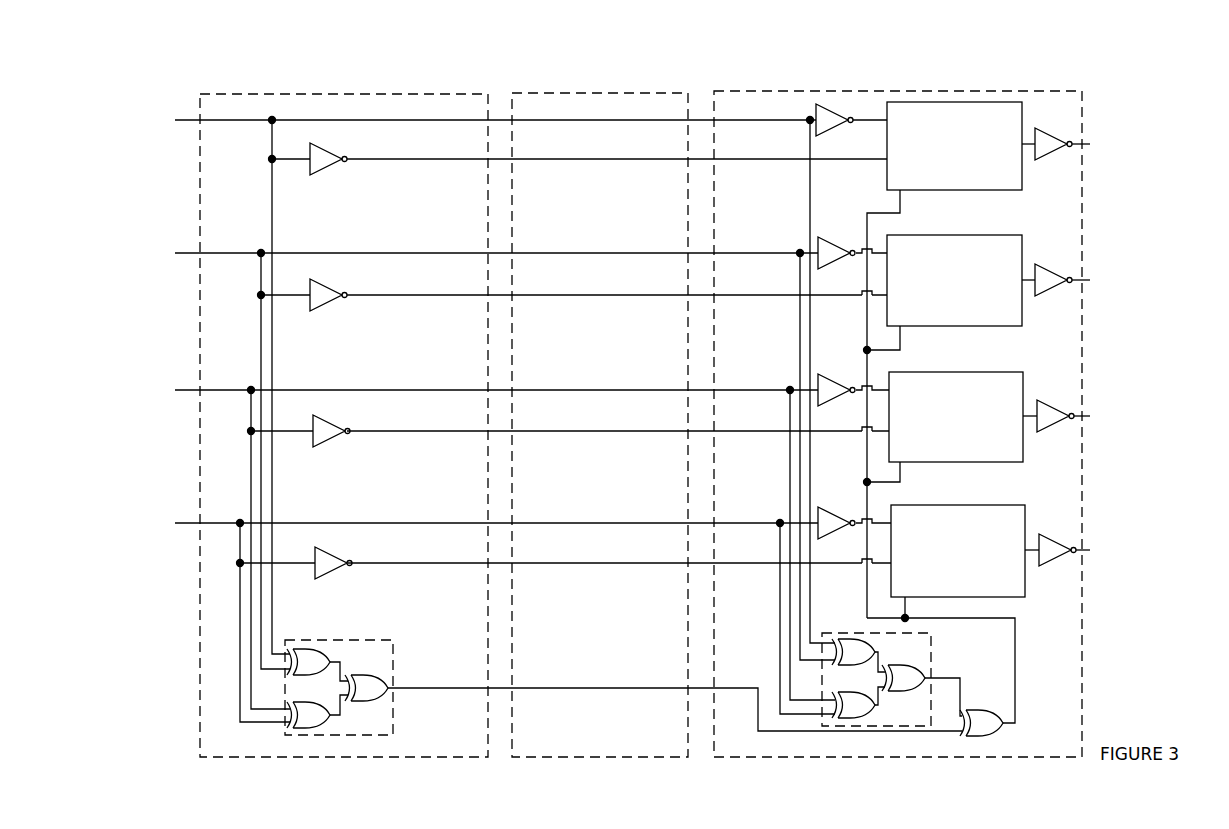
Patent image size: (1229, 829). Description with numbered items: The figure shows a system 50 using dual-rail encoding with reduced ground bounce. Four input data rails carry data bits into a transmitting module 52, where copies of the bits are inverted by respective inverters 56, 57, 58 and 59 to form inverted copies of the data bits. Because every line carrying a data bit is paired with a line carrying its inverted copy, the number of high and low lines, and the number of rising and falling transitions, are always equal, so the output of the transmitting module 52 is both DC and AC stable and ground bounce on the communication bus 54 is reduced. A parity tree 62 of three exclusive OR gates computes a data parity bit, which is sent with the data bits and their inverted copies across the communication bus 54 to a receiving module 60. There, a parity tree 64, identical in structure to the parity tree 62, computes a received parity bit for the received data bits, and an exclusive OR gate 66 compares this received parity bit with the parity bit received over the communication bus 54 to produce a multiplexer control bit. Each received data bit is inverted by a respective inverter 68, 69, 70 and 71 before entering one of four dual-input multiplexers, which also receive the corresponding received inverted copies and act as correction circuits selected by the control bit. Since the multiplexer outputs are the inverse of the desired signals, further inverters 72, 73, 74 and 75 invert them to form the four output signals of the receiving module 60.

The system 50 is at (203, 75).
The transmitting module 52 is at (202, 743).
The communication bus 54 is at (606, 757).
The inverter 56 is at (310, 170).
The inverter 57 is at (310, 306).
The inverter 58 is at (313, 442).
The inverter 59 is at (315, 575).
The receiving module 60 is at (905, 757).
The parity tree 62 is at (343, 737).
The parity tree 64 is at (832, 728).
The exclusive OR gate 66 is at (985, 737).
The inverter 68 is at (845, 113).
The inverter 69 is at (833, 253).
The inverter 70 is at (833, 390).
The inverter 71 is at (833, 522).
The inverter 72 is at (1052, 135).
The inverter 73 is at (1055, 272).
The inverter 74 is at (1057, 408).
The inverter 75 is at (1059, 542).